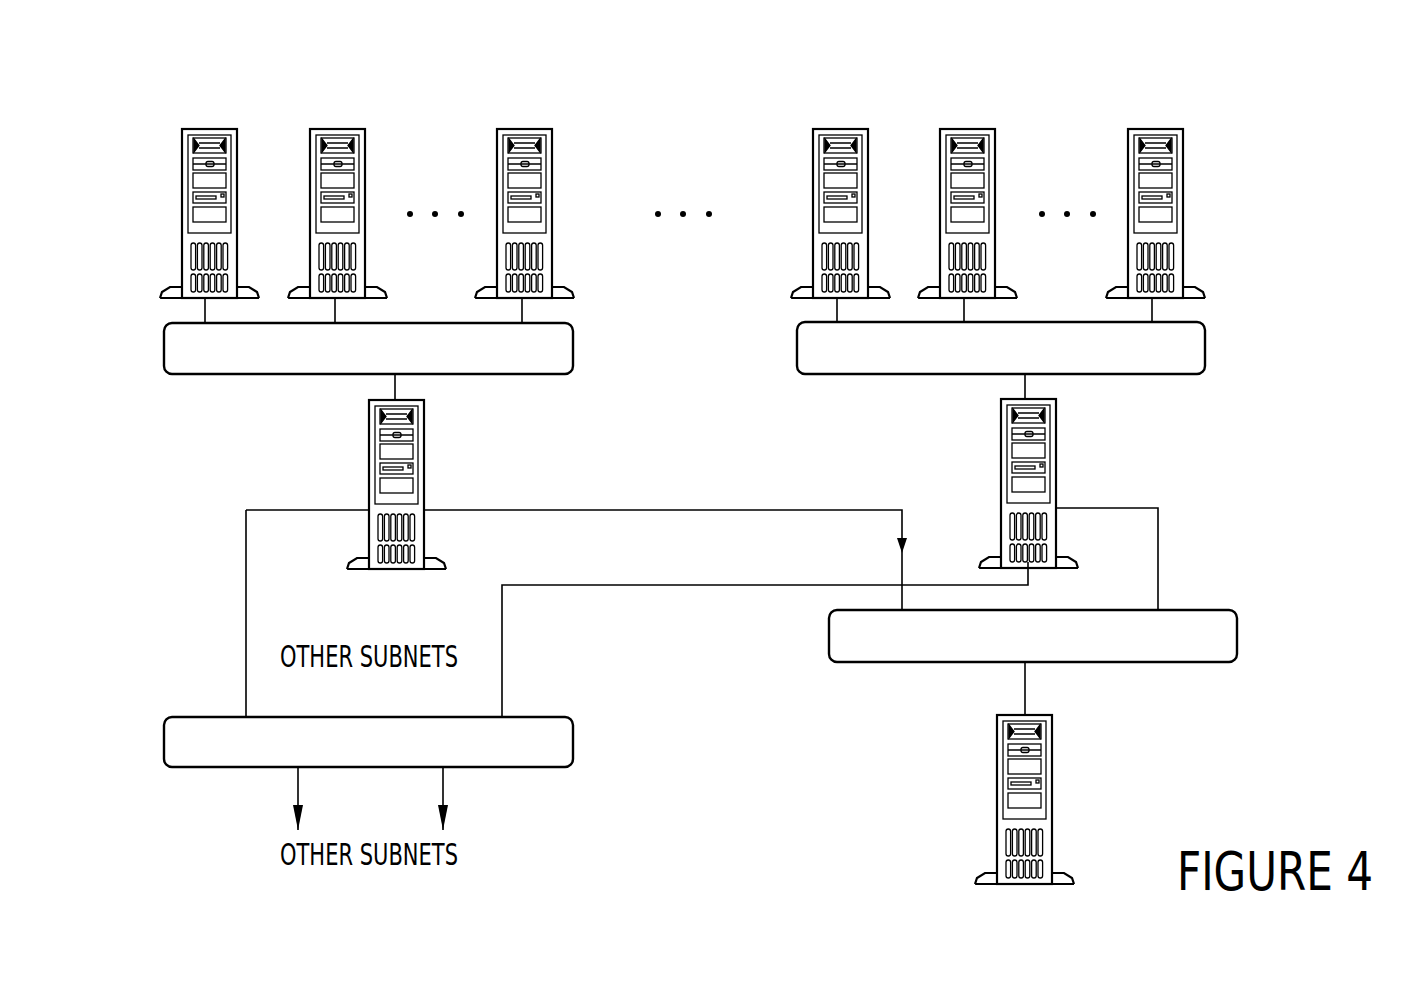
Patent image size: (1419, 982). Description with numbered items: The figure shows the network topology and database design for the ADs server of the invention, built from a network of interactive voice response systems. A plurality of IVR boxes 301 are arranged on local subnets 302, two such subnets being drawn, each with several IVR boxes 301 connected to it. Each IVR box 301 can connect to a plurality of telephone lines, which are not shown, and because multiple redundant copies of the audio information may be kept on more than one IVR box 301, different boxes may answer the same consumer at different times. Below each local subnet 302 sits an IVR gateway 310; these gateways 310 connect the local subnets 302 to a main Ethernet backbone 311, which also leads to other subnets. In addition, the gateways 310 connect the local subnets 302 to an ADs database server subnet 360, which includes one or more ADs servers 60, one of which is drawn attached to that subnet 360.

The IVR box 301 is at (1164, 128).
The local subnet 302 is at (1213, 423).
The IVR gateway 310 is at (1001, 441).
The main Ethernet backbone 311 is at (543, 768).
The ADs database server subnet 360 is at (1208, 663).
The ADs server 60 is at (932, 852).